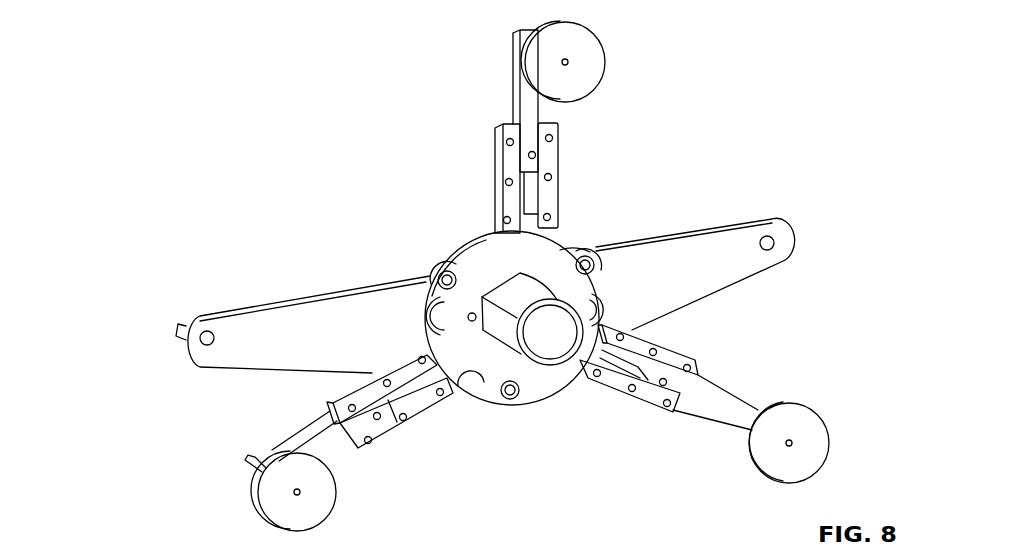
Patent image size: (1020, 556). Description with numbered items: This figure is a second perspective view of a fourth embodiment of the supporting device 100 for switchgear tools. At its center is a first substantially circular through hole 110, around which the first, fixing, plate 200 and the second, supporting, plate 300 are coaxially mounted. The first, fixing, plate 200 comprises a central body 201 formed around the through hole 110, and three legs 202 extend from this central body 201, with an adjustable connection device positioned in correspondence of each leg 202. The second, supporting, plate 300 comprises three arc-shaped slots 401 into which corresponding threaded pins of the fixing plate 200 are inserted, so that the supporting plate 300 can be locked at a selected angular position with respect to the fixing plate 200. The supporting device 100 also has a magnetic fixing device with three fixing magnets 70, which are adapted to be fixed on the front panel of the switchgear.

The supporting device 100 is at (203, 68).
The fixing magnet 70 is at (533, 60).
The first substantially circular through hole 110 is at (536, 350).
The first, fixing, plate 200 is at (474, 252).
The central body 201 is at (492, 366).
The leg 202 is at (556, 188).
The second, supporting, plate 300 is at (700, 240).
The arc-shaped slot 401 is at (420, 307).